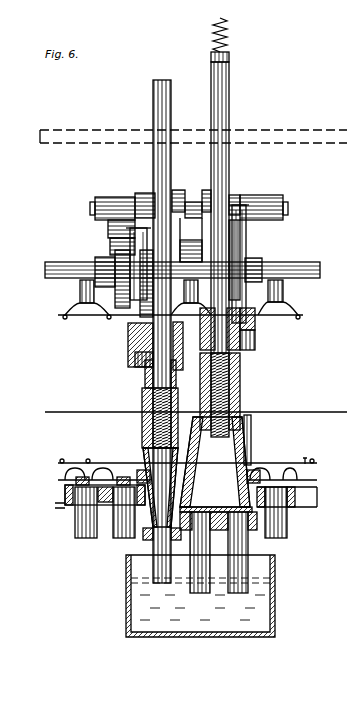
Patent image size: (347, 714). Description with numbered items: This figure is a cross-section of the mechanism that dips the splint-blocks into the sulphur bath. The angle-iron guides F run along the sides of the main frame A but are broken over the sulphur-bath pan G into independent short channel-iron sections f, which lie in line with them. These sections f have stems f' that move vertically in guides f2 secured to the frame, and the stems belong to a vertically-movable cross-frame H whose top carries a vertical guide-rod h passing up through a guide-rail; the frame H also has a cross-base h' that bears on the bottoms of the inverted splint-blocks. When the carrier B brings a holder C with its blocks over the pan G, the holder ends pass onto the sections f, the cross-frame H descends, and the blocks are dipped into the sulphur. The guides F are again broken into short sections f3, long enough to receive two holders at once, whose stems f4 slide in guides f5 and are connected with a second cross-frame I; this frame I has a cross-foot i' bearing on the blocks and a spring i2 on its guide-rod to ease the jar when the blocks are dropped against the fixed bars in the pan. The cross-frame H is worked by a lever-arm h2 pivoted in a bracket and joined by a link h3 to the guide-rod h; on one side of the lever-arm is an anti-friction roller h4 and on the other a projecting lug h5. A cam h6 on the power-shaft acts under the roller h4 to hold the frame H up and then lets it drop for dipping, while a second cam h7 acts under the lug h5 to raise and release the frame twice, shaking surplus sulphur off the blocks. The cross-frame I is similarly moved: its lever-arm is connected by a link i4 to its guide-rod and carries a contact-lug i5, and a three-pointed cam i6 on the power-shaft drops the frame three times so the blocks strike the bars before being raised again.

The spring i2 is at (229, 38).
The cross-foot i' is at (215, 279).
The vertical guide-rod h is at (154, 264).
The cross-base h' is at (160, 515).
The lever-arm h2 is at (137, 196).
The anti-friction roller h4 is at (112, 227).
The projecting lug h5 is at (110, 243).
The contact-lug i5 is at (237, 194).
The link i4 is at (246, 254).
The horizontal shaft r is at (297, 265).
The cam i6 is at (243, 296).
The cam h6 is at (113, 303).
The link h3 is at (132, 312).
The second cam h7 is at (130, 323).
The carrier B is at (282, 312).
The frame A is at (77, 422).
The cross-frame H is at (142, 398).
The second cross-frame I is at (240, 386).
The guides f5 is at (244, 410).
The guides f2 is at (122, 476).
The stems f' is at (135, 466).
The stems f4 is at (252, 470).
The holder C is at (65, 493).
The angle-iron guides F is at (57, 515).
The bar F' is at (287, 512).
The rollers Z is at (92, 528).
The short sections f is at (153, 540).
The short sections f3 is at (222, 530).
The sulphur-bath pan G is at (207, 627).